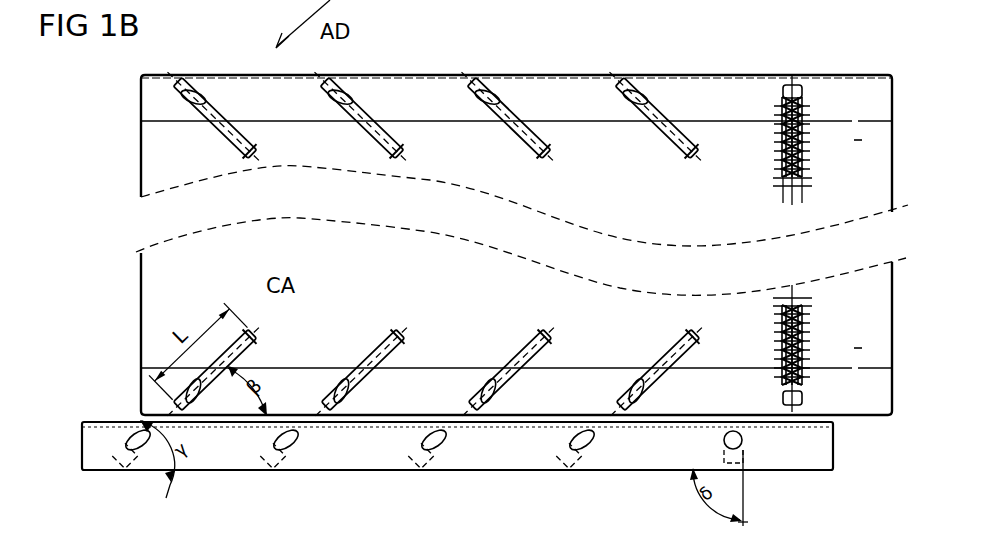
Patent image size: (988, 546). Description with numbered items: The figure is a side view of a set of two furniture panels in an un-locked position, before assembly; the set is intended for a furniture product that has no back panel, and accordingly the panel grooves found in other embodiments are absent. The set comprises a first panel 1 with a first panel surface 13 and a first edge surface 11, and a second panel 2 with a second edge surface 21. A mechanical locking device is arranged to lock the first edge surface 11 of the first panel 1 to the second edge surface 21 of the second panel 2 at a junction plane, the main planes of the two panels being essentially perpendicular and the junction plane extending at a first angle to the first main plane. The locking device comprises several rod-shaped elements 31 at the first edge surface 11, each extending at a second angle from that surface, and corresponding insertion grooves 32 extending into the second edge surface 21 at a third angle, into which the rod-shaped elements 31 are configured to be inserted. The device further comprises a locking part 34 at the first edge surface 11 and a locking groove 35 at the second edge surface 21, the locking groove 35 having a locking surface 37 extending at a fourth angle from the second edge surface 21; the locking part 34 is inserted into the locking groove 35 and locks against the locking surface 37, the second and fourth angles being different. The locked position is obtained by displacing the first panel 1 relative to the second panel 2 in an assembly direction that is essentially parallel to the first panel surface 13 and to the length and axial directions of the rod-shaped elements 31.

The first panel 1 is at (134, 330).
The second panel 2 is at (75, 440).
The first edge surface 11 is at (557, 395).
The first panel surface 13 is at (173, 158).
The second edge surface 21 is at (495, 450).
The rod-shaped element 31 is at (178, 403).
The insertion groove 32 is at (136, 438).
The locking part 34 is at (805, 395).
The locking groove 35 is at (742, 441).
The locking surface 37 is at (745, 455).